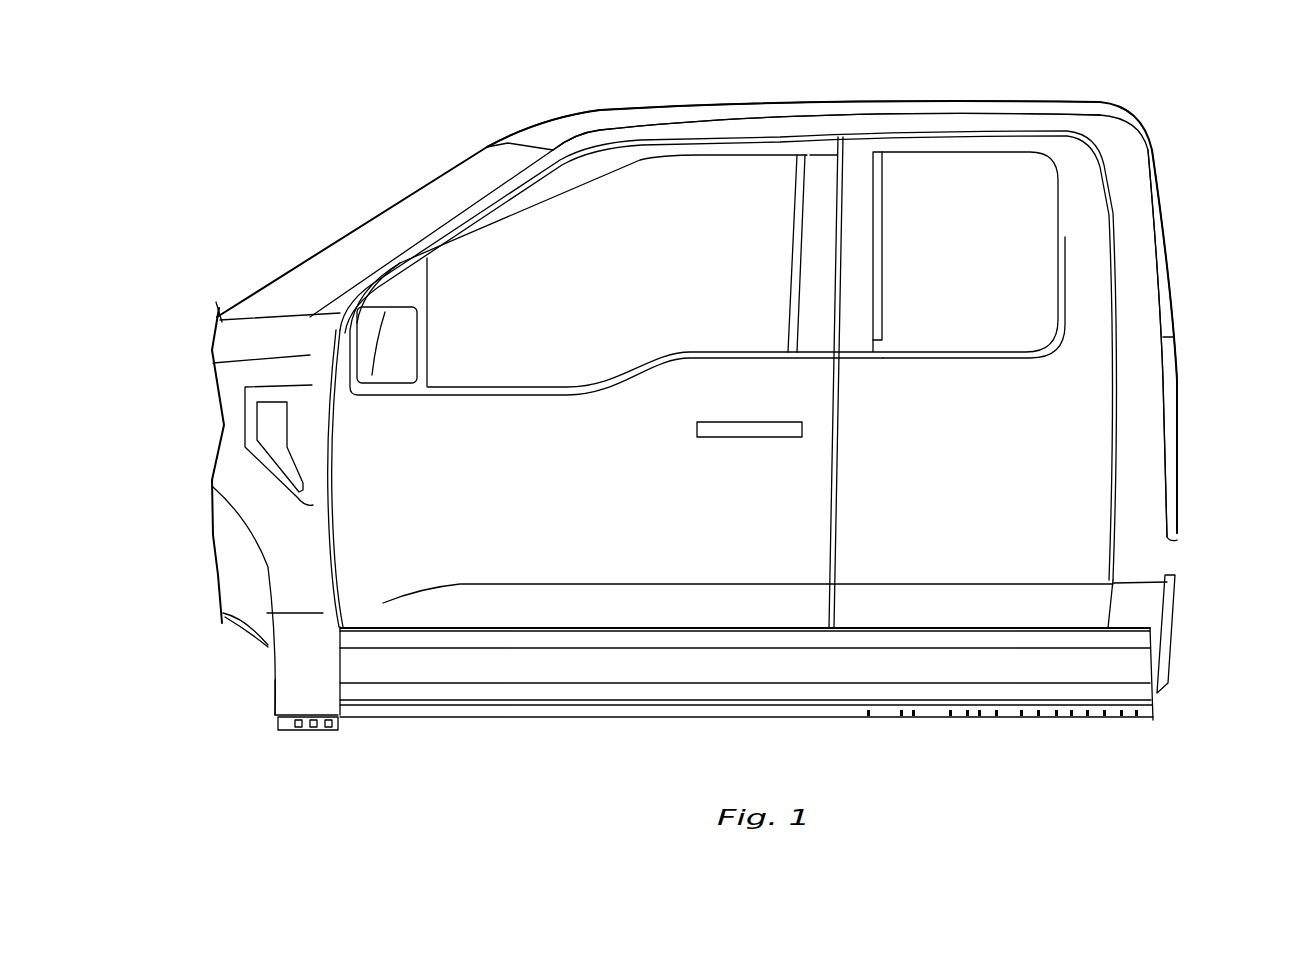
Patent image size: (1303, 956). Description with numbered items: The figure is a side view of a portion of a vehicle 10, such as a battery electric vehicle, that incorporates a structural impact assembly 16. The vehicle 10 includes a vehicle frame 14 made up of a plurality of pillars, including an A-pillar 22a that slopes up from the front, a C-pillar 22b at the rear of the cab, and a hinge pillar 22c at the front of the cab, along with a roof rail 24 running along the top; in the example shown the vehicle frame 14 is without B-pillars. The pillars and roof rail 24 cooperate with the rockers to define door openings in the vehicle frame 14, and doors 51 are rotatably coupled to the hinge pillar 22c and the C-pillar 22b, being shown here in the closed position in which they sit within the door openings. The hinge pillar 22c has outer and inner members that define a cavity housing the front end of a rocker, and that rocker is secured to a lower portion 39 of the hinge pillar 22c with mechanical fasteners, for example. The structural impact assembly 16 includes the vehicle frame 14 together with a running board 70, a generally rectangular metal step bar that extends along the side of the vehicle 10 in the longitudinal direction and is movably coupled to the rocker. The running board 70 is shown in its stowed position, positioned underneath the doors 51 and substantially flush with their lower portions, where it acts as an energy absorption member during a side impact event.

The vehicle 10 is at (316, 122).
The vehicle frame 14 is at (600, 112).
The A-pillar 22a is at (433, 232).
The C-pillar 22b is at (1142, 308).
The hinge pillar 22c is at (267, 503).
The roof rail 24 is at (832, 128).
The door 51 is at (457, 510).
The lower portion of the hinge pillar 39 is at (297, 680).
The structural impact assembly 16 is at (446, 736).
The running board 70 is at (620, 665).